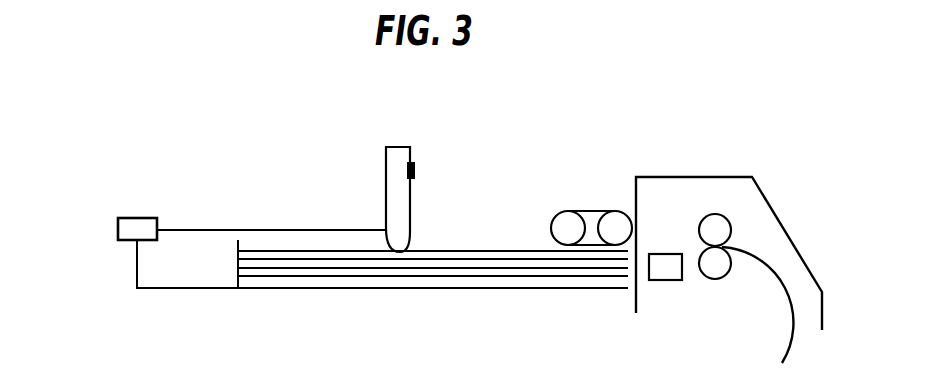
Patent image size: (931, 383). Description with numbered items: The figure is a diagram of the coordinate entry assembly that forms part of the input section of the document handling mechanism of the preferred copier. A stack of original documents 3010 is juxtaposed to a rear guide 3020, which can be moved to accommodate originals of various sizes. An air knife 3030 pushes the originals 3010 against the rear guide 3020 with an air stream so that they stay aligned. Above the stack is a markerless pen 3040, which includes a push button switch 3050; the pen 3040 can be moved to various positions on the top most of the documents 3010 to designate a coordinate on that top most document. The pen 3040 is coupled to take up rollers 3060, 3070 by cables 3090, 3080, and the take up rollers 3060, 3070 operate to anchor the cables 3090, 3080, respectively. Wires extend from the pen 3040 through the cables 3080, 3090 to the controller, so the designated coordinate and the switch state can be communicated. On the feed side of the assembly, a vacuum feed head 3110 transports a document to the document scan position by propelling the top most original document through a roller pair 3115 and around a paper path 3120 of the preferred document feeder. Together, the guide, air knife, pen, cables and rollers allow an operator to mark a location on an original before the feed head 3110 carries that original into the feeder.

The original documents 3010 is at (443, 252).
The rear guide 3020 is at (238, 260).
The air knife 3030 is at (668, 281).
The markerless pen 3040 is at (393, 147).
The push button switch 3050 is at (415, 162).
The take up roller 3060 is at (118, 231).
The take up roller 3070 is at (89, 235).
The cable 3080 is at (188, 230).
The cable 3090 is at (204, 280).
The vacuum feed head 3110 is at (598, 211).
The roller pair 3115 is at (715, 213).
The paper path 3120 is at (729, 301).